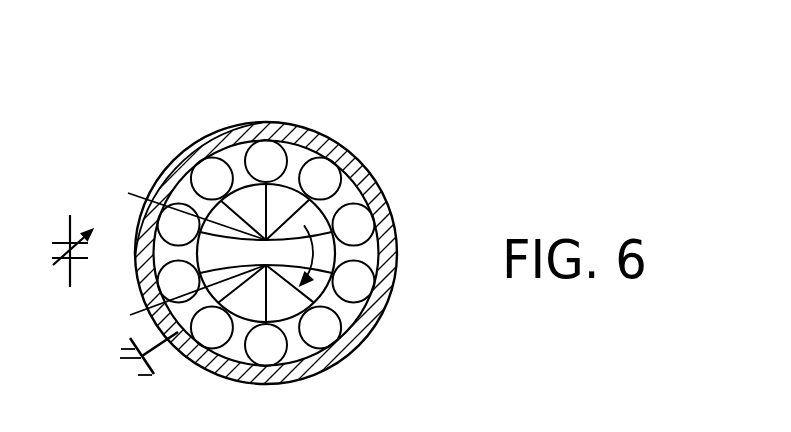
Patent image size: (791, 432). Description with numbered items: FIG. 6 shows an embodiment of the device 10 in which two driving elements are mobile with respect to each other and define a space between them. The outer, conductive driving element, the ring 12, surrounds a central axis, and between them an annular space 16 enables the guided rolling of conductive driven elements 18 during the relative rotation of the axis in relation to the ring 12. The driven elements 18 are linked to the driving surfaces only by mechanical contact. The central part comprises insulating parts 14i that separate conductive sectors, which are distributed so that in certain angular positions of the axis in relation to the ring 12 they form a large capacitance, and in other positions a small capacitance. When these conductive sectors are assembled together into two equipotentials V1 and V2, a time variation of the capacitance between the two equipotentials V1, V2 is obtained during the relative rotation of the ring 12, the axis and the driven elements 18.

The device 10 is at (166, 158).
The conductive driving element 12 is at (342, 334).
The insulating parts 14i is at (288, 210).
The annular space 16 is at (357, 201).
The driven element 18 is at (360, 282).
The equipotential V1 is at (181, 209).
The equipotential V2 is at (180, 296).